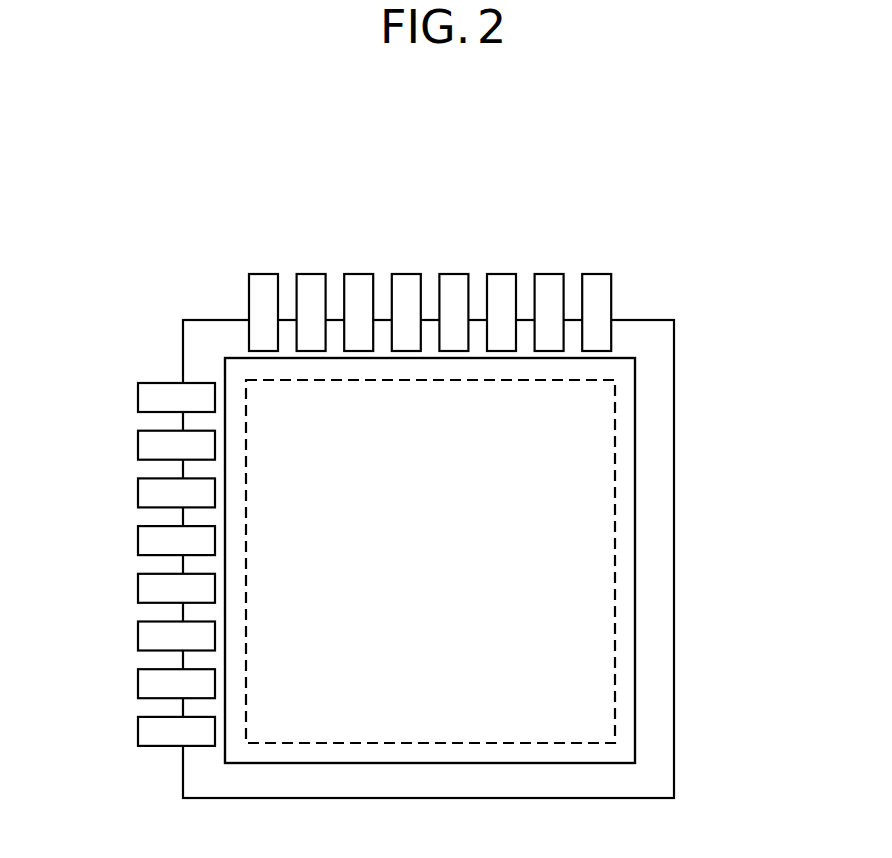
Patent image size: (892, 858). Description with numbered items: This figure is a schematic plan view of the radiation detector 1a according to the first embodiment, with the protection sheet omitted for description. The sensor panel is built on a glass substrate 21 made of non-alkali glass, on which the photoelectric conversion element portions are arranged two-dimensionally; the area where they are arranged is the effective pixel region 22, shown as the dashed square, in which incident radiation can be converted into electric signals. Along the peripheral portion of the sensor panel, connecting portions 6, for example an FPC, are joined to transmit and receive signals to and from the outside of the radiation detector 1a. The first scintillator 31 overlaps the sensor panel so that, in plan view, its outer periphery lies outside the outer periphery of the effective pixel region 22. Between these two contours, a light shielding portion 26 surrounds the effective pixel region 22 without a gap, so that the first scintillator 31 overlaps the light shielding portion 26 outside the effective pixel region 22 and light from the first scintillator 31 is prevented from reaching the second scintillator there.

The radiation detector 1a is at (672, 212).
The glass substrate 21 is at (677, 358).
The connecting portions 6 is at (588, 273).
The first scintillator 31 is at (636, 466).
The light shielding portion 26 is at (626, 728).
The effective pixel region 22 is at (615, 640).